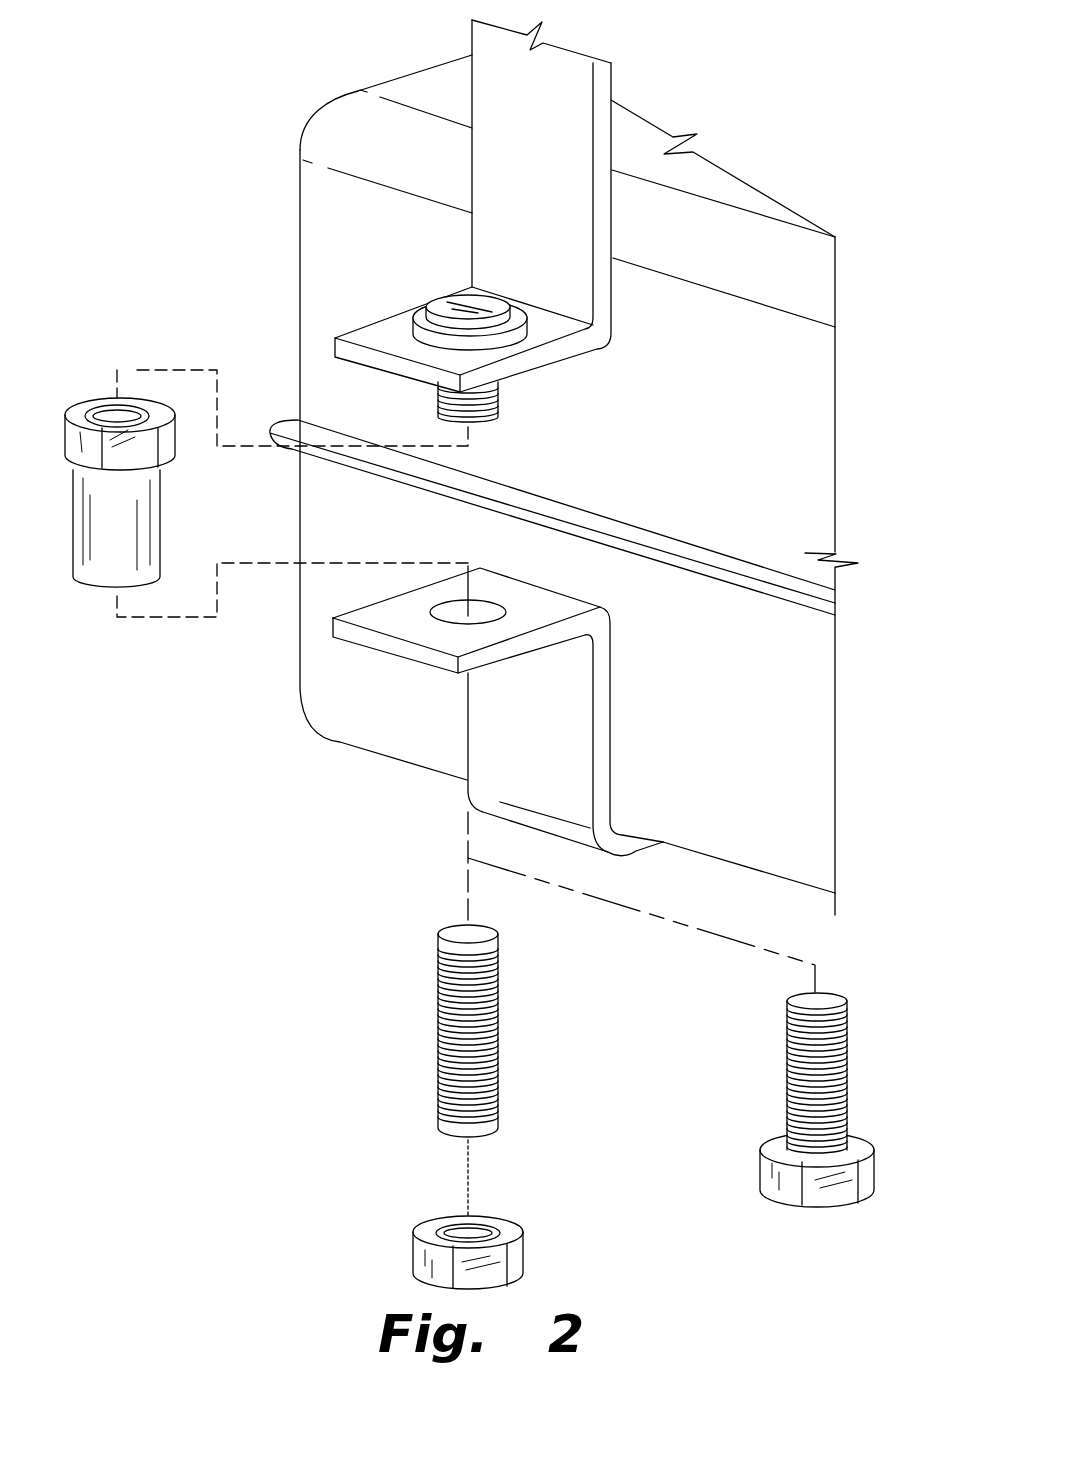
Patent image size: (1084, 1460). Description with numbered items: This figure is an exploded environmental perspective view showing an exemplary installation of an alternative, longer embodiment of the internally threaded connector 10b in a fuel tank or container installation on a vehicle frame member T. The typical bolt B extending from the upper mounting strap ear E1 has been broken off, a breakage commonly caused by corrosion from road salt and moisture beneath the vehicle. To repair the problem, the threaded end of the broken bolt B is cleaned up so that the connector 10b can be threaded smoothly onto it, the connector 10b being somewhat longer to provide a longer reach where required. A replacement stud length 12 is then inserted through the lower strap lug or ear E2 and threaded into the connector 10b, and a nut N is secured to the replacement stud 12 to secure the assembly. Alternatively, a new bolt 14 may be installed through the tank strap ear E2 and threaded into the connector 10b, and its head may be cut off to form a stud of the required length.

The truck rail / frame member T is at (318, 118).
The mounting strap ear E1 is at (392, 325).
The lower strap lug or ear E2 is at (410, 664).
The bolt B is at (498, 400).
The internally threaded connector 10b is at (82, 582).
The replacement stud length 12 is at (437, 1021).
The new bolt 14 is at (847, 1067).
The nut N is at (432, 1222).